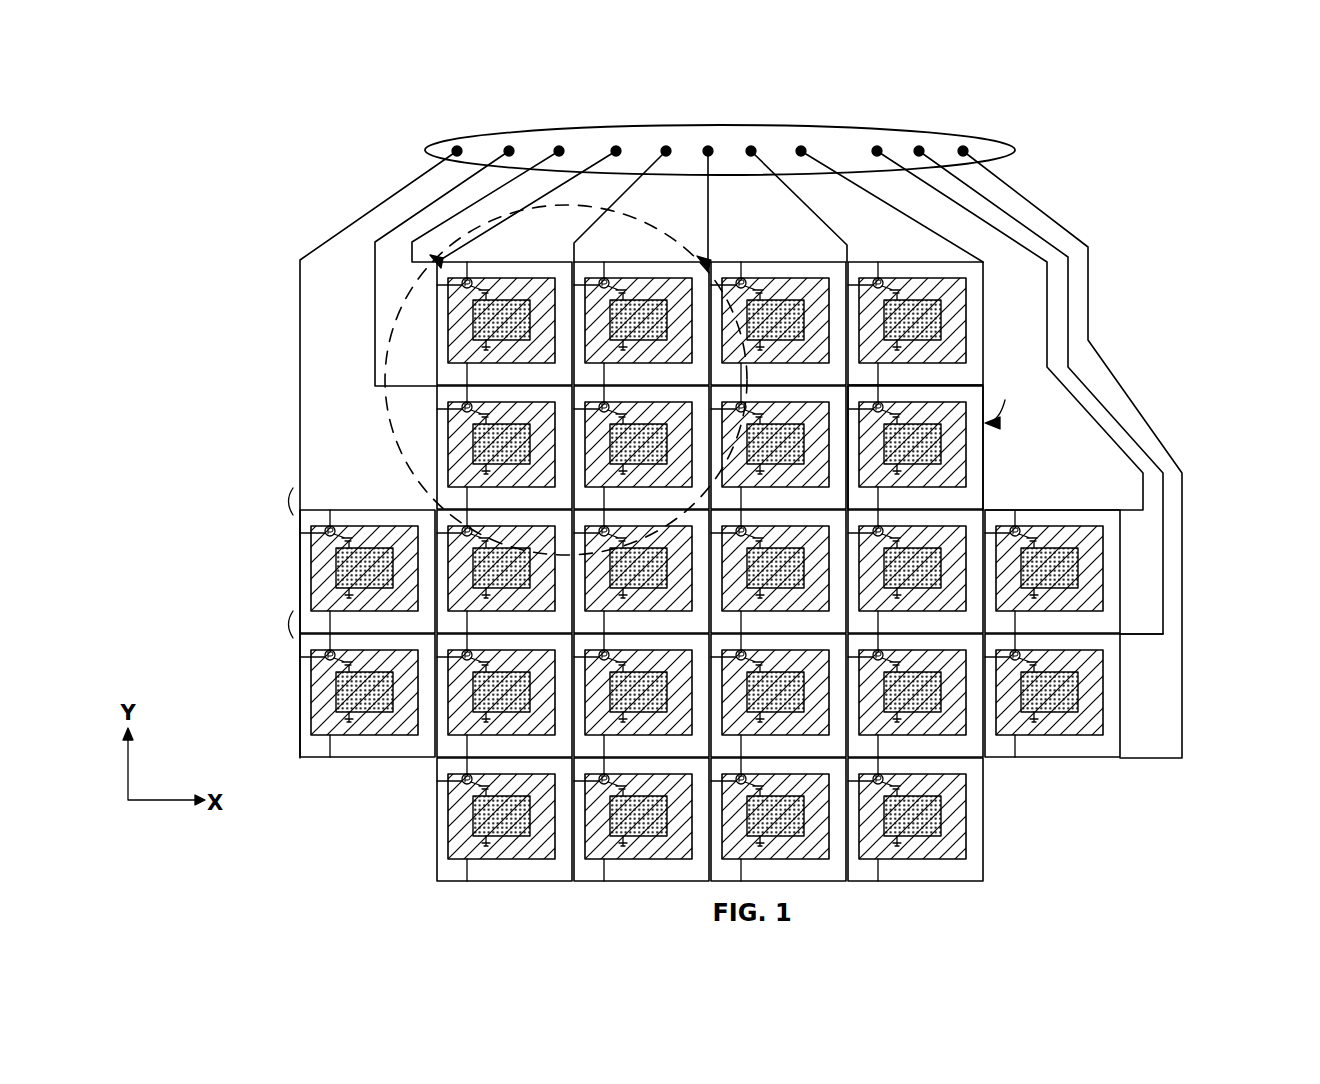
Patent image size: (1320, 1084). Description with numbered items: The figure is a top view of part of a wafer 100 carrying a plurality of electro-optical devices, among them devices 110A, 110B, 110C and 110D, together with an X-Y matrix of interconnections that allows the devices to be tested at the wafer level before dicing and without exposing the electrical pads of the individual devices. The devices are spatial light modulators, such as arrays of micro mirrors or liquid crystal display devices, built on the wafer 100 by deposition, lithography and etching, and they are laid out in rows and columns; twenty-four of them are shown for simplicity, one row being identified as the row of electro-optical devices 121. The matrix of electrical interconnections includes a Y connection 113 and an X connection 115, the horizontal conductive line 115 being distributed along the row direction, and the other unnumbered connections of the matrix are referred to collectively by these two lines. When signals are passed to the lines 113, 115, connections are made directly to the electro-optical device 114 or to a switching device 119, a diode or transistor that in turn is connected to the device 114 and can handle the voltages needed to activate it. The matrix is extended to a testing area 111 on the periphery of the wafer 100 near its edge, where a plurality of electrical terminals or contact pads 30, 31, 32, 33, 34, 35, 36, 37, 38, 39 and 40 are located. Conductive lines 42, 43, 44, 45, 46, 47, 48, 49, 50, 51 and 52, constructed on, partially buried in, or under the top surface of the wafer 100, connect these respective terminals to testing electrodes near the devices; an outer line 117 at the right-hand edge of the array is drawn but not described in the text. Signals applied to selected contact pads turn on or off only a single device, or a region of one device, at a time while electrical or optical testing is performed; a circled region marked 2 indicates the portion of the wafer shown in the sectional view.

The wafer 100 is at (272, 155).
The section view circle 2 is at (386, 398).
The electrical terminal 30 is at (460, 145).
The electrical terminal 31 is at (512, 145).
The electrical terminal 32 is at (562, 145).
The electrical terminal 33 is at (619, 145).
The electrical terminal 34 is at (669, 145).
The electrical terminal 35 is at (711, 145).
The electrical terminal 36 is at (754, 145).
The electrical terminal 37 is at (804, 145).
The electrical terminal 38 is at (880, 145).
The electrical terminal 39 is at (922, 145).
The electrical terminal 40 is at (965, 145).
The testing area 111 is at (1018, 150).
The conductive line 42 is at (298, 433).
The conductive line 43 is at (375, 296).
The conductive line 44 is at (375, 262).
The conductive line 45 is at (520, 206).
The conductive line 46 is at (640, 182).
The conductive line 47 is at (711, 212).
The conductive line 48 is at (803, 213).
The conductive line 49 is at (910, 218).
The conductive line 50 is at (963, 203).
The conductive line 51 is at (1027, 224).
The conductive line 52 is at (1093, 297).
The electro-optical device 110A is at (446, 322).
The electro-optical device 110B is at (685, 276).
The electro-optical device 110C is at (446, 450).
The electro-optical device 110D is at (654, 402).
The Y connection 113 is at (850, 498).
The electro-optical device 114 is at (968, 445).
The X connection 115 is at (930, 384).
The substrate edge 117 is at (1122, 636).
The switching device 119 is at (987, 388).
The row of electro-optical devices 121 is at (1005, 400).